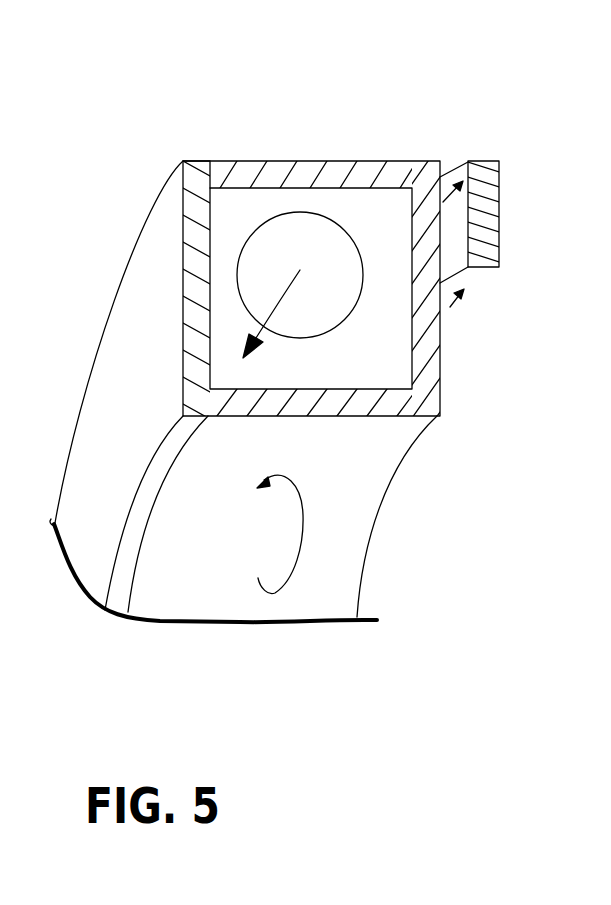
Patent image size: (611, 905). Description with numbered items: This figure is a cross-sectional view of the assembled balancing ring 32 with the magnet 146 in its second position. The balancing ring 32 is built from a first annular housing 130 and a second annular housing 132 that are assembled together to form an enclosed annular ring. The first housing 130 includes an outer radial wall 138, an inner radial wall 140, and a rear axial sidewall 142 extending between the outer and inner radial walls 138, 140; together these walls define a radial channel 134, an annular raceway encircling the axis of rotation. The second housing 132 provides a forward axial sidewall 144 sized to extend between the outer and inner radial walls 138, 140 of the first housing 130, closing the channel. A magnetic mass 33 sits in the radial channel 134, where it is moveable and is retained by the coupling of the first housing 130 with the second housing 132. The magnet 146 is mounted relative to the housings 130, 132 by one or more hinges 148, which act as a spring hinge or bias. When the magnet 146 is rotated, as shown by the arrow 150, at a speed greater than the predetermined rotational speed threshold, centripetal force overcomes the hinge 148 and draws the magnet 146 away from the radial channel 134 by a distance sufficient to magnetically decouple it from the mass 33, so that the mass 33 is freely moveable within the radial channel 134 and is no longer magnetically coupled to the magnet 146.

The balancing ring 32 is at (233, 45).
The mass 33 is at (324, 247).
The first annular housing 130 is at (413, 159).
The second annular housing 132 is at (188, 157).
The radial channel 134 is at (275, 389).
The outer radial wall 138 is at (284, 170).
The inner radial wall 140 is at (340, 325).
The rear axial sidewall 142 is at (432, 363).
The forward axial sidewall 144 is at (200, 266).
The magnet 146 is at (494, 222).
The hinge 148 is at (442, 175).
The arrow 150 is at (302, 557).